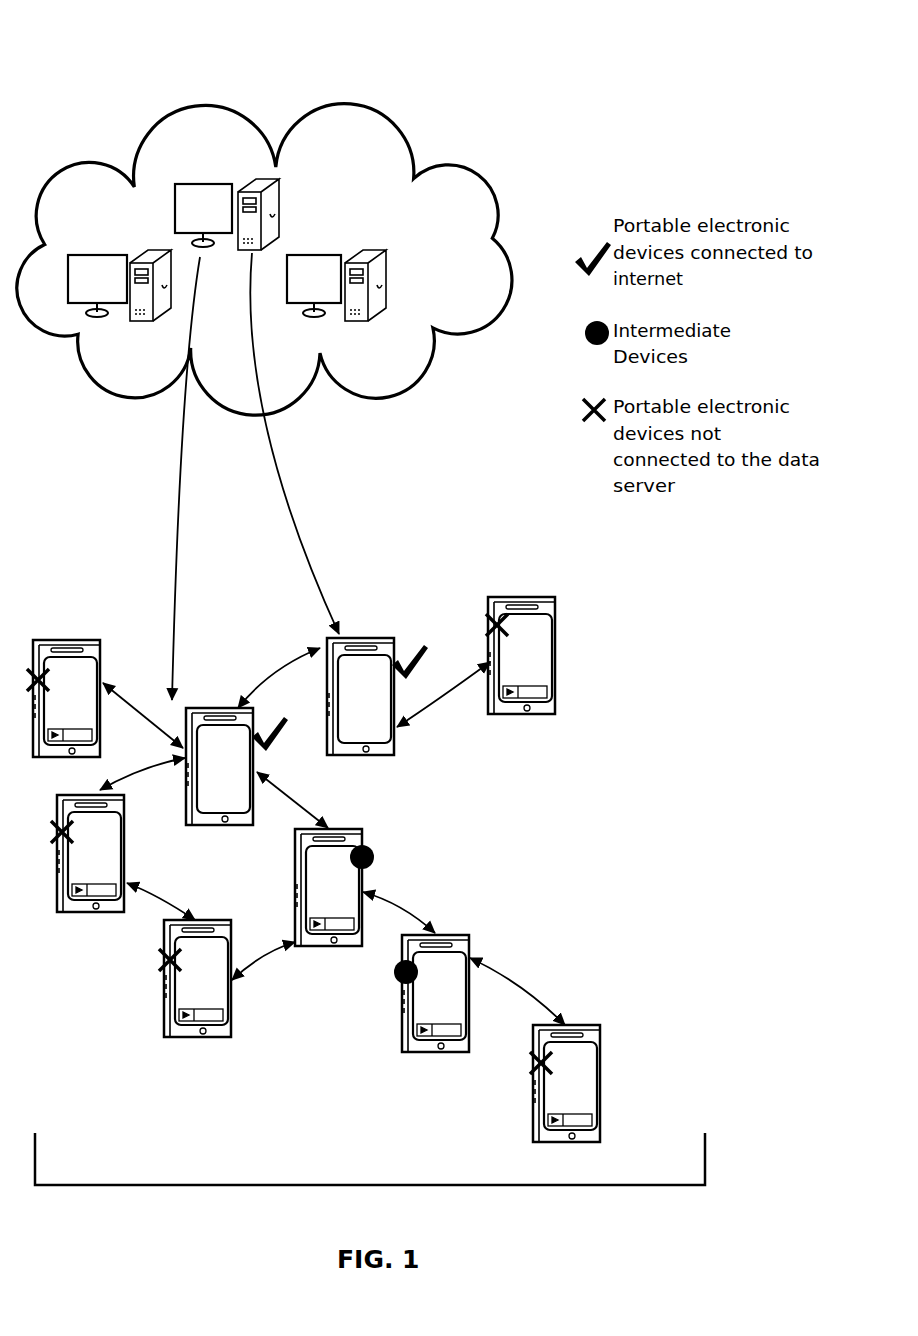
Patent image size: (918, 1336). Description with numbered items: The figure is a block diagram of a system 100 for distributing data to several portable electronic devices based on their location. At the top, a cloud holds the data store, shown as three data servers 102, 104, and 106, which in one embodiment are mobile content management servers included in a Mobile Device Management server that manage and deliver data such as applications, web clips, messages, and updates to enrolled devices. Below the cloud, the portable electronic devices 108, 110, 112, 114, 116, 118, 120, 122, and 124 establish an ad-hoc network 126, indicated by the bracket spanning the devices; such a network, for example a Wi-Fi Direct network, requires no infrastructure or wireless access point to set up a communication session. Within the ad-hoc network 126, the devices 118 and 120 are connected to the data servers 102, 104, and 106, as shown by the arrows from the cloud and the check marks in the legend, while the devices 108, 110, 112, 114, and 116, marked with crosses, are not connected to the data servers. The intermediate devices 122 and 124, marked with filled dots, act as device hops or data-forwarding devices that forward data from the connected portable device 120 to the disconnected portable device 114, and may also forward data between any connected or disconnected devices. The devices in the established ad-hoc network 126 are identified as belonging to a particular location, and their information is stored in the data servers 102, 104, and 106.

The system 100 is at (150, 70).
The data server 102 is at (70, 253).
The data server 104 is at (309, 243).
The data server 106 is at (412, 311).
The portable electronic device 108 is at (51, 711).
The portable electronic device 110 is at (75, 866).
The portable electronic device 112 is at (182, 991).
The portable electronic device 114 is at (551, 1096).
The portable electronic device 116 is at (506, 670).
The portable electronic device 118 is at (345, 685).
The portable electronic device 120 is at (204, 781).
The intermediate device 122 is at (313, 900).
The intermediate device 124 is at (420, 1006).
The ad-hoc network 126 is at (397, 1186).